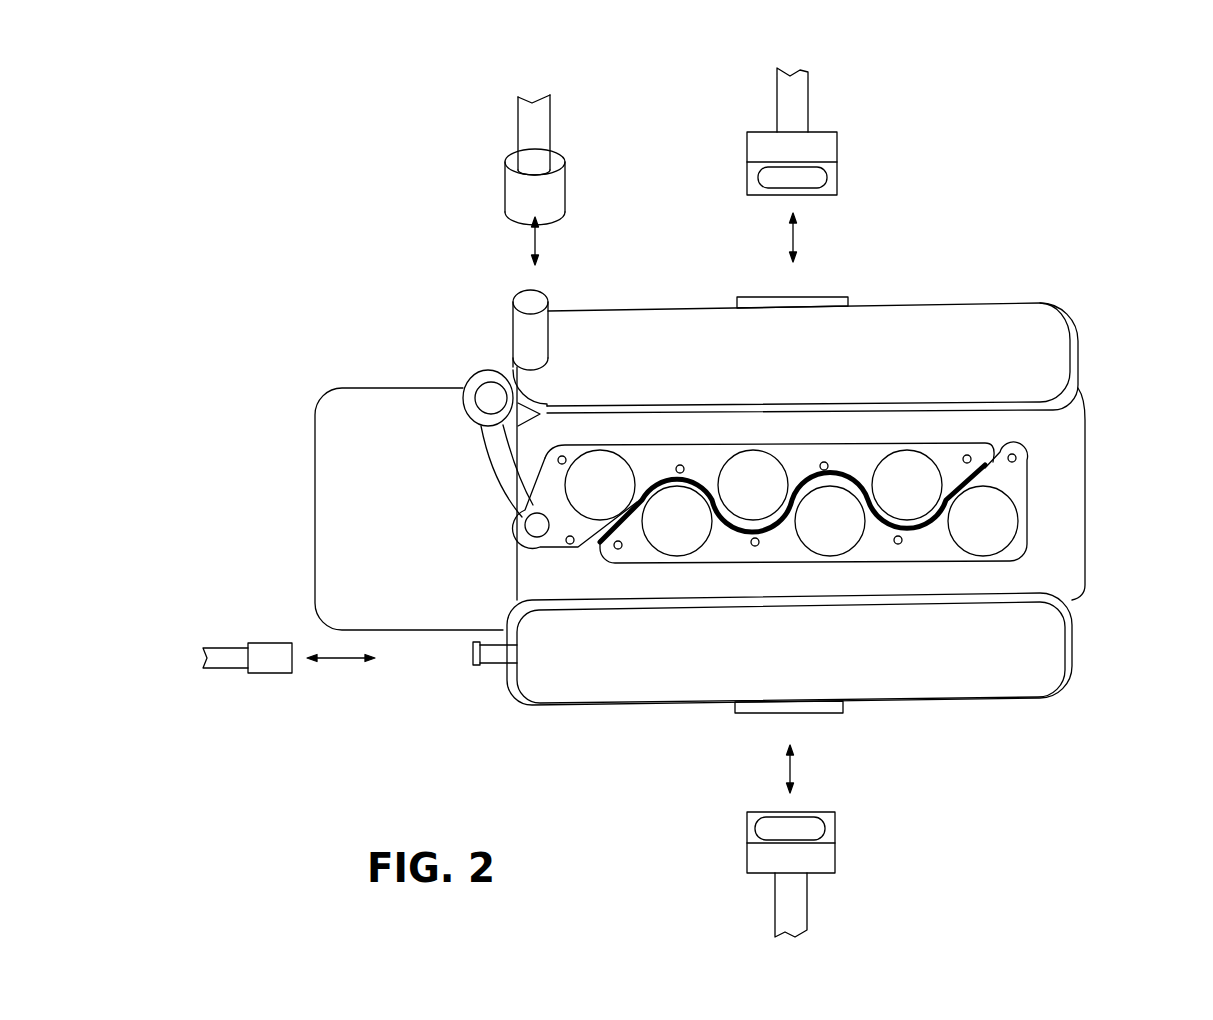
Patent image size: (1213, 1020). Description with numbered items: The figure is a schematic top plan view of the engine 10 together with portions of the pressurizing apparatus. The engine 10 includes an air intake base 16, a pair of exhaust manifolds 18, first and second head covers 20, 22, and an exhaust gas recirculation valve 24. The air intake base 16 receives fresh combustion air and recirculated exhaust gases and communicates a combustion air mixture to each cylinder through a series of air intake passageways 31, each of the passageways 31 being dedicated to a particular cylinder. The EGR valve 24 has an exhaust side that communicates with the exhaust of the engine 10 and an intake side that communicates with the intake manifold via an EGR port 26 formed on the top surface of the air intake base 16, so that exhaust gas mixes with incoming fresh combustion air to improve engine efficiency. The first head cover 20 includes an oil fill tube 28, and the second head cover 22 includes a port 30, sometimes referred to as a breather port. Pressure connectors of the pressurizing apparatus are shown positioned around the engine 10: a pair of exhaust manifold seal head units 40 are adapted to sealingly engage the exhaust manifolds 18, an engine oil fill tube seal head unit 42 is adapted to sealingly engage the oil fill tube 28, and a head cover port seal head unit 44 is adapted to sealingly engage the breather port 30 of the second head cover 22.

The engine 10 is at (1012, 727).
The air intake base 16 is at (930, 550).
The exhaust manifolds 18 is at (848, 297).
The first head cover 20 is at (1050, 353).
The second head cover 22 is at (1053, 658).
The exhaust gas recirculation (EGR) valve 24 is at (463, 415).
The EGR port 26 is at (530, 525).
The oil fill tube 28 is at (517, 323).
The port 30 is at (490, 660).
The air intake passageways 31 is at (1012, 522).
The exhaust manifold seal head units 40 is at (837, 150).
The engine oil fill tube seal head unit 42 is at (565, 177).
The head cover port seal head unit 44 is at (282, 673).